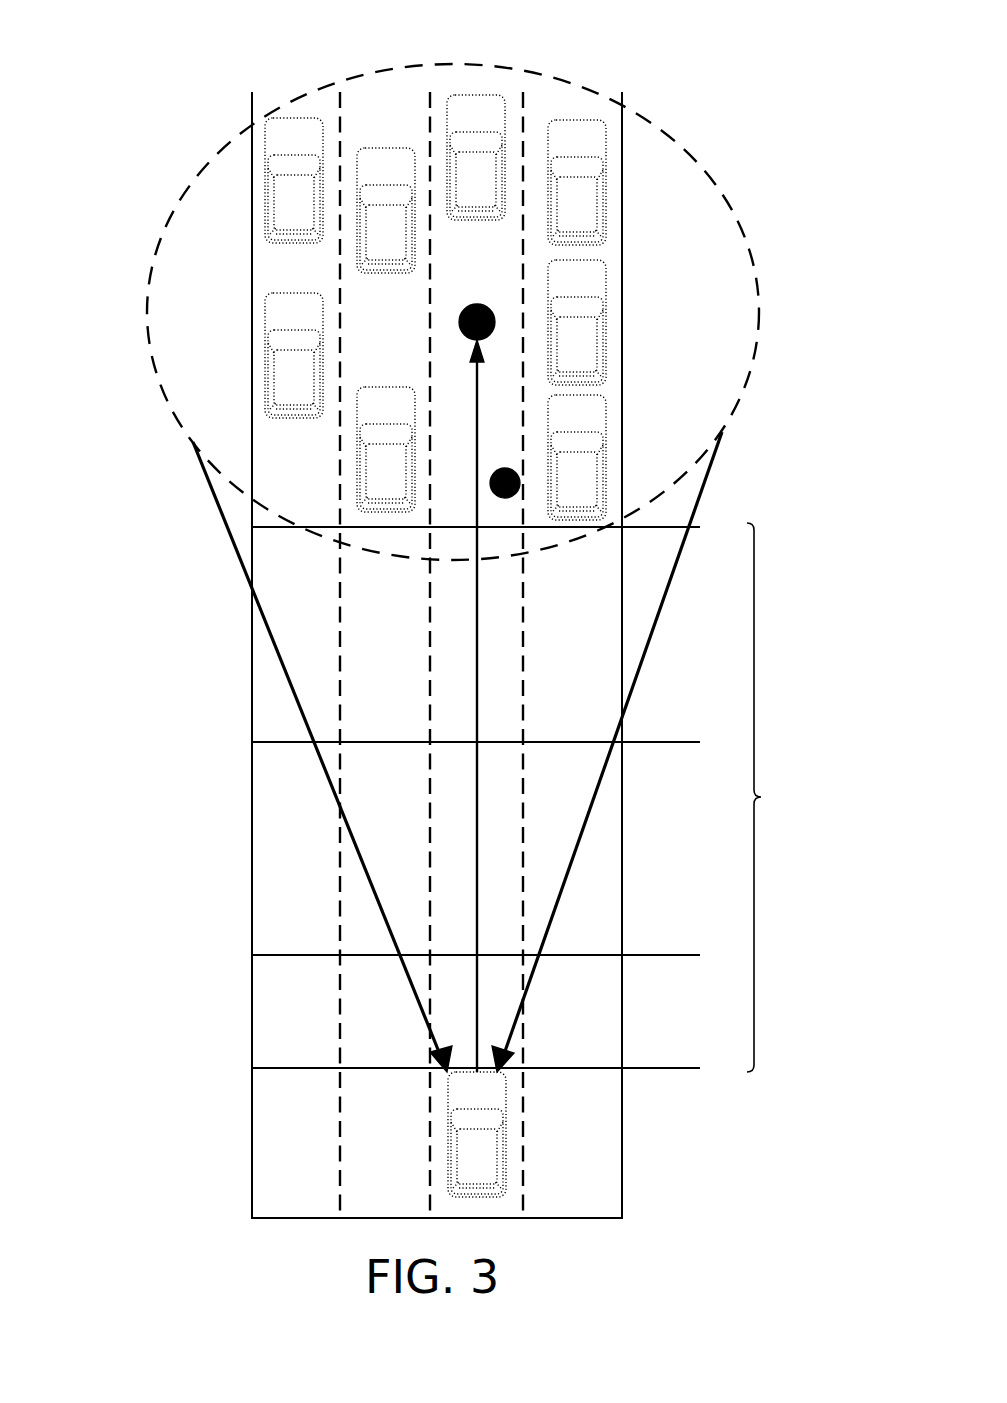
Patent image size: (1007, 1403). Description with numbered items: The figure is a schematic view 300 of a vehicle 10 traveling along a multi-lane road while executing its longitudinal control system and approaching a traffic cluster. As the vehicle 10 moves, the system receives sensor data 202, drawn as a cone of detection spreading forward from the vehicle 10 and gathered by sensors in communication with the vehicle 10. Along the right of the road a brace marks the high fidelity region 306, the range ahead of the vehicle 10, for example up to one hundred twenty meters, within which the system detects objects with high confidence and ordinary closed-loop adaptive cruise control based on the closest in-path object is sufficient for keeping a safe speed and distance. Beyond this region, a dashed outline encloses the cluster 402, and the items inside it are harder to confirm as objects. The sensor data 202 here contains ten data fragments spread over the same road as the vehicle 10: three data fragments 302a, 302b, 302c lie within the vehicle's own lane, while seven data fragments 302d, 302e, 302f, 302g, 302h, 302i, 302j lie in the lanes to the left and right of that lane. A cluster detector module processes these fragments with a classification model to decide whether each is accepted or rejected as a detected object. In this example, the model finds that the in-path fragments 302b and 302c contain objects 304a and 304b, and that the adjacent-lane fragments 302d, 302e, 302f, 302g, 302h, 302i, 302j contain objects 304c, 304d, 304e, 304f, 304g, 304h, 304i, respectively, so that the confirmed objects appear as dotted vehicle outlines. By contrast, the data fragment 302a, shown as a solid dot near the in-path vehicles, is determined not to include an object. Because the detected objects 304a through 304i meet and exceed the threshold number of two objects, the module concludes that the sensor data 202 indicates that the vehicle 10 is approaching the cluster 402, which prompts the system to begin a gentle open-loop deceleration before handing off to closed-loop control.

The schematic view 300 is at (709, 58).
The vehicle 10 is at (448, 1158).
The sensor data 202 is at (238, 560).
The high fidelity region 306 is at (796, 837).
The cluster 402 is at (731, 203).
The data fragment 302a is at (520, 483).
The data fragment 302b is at (398, 179).
The object 304a is at (469, 305).
The data fragment 302c is at (509, 117).
The object 304b is at (475, 93).
The data fragment 302d is at (691, 444).
The object 304c is at (603, 440).
The data fragment 302e is at (691, 318).
The object 304d is at (603, 340).
The data fragment 302f is at (679, 182).
The object 304e is at (605, 215).
The data fragment 302g is at (204, 160).
The object 304f is at (266, 170).
The data fragment 302h is at (245, 210).
The object 304g is at (358, 245).
The data fragment 302i is at (185, 338).
The object 304h is at (266, 345).
The data fragment 302j is at (240, 427).
The object 304i is at (367, 389).